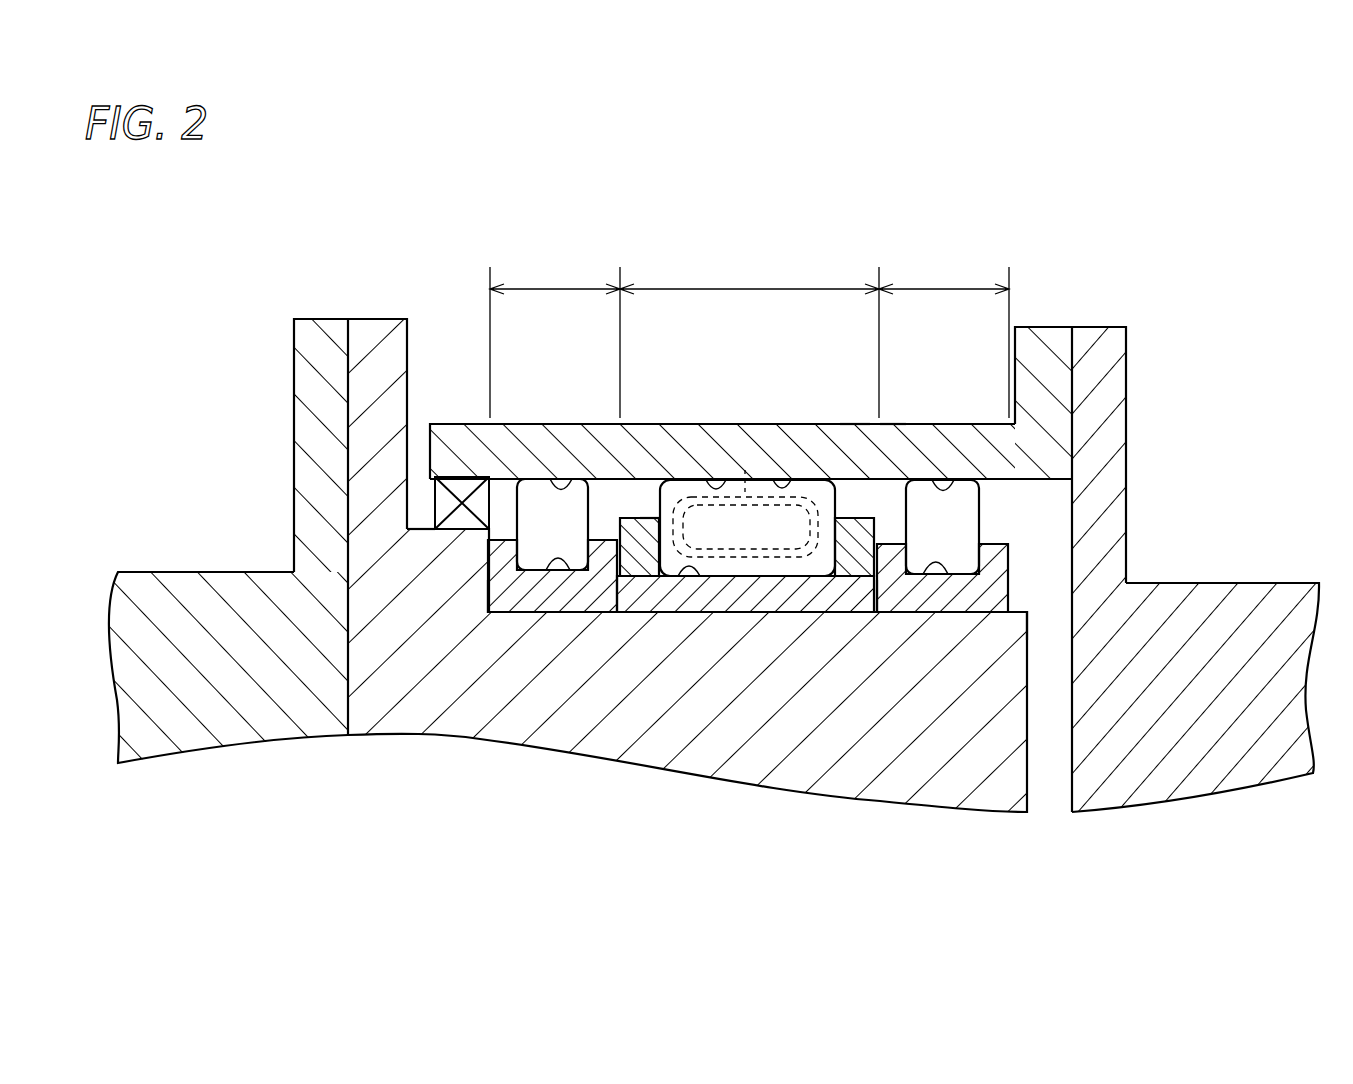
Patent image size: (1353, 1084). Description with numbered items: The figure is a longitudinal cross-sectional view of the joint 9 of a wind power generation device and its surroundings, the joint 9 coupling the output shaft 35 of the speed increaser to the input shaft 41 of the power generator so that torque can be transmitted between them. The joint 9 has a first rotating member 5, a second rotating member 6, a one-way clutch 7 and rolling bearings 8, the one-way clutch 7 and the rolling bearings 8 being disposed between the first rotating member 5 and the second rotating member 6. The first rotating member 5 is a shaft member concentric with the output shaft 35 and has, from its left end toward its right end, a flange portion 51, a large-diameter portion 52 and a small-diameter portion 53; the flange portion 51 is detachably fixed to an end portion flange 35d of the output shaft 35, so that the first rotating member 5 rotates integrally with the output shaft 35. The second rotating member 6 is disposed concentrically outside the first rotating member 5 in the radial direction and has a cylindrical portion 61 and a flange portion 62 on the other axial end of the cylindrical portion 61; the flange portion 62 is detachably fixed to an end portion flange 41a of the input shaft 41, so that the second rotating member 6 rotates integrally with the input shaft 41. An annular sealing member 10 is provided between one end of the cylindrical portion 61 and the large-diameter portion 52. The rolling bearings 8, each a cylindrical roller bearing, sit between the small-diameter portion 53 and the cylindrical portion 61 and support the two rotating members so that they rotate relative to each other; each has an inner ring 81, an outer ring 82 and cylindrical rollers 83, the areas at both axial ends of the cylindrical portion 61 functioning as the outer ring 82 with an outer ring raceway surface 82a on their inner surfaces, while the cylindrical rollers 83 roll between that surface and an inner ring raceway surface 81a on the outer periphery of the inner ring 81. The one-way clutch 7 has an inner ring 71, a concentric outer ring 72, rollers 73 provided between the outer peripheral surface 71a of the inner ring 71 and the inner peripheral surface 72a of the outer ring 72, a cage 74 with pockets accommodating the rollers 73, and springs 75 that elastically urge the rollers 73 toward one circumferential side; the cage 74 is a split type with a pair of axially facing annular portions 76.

The first rotating member 5 is at (852, 715).
The second rotating member 6 is at (897, 413).
The one-way clutch 7 is at (761, 495).
The rolling bearings 8 is at (561, 625).
The joint 9 is at (855, 222).
The annular sealing member 10 is at (465, 492).
The output shaft 35 is at (189, 559).
The end portion flange 35d is at (322, 318).
The input shaft 41 is at (1222, 570).
The end portion flange 41a is at (1100, 325).
The flange portion 51 is at (375, 318).
The large-diameter portion 52 is at (418, 525).
The small-diameter portion 53 is at (1013, 613).
The cylindrical portion 61 is at (806, 412).
The flange portion 62 is at (1045, 325).
The inner ring 71 is at (733, 598).
The outer peripheral surface 71a is at (684, 565).
The outer ring 72 is at (748, 289).
The inner peripheral surface 72a is at (720, 492).
The rollers 73 is at (782, 490).
The cage 74 is at (644, 505).
The springs 75 is at (745, 470).
The annular portions 76 is at (643, 517).
The inner ring 81 is at (517, 597).
The inner ring raceway surface 81a is at (568, 570).
The outer ring 82 is at (548, 288).
The outer ring raceway surface 82a is at (560, 492).
The cylindrical rollers 83 is at (580, 492).